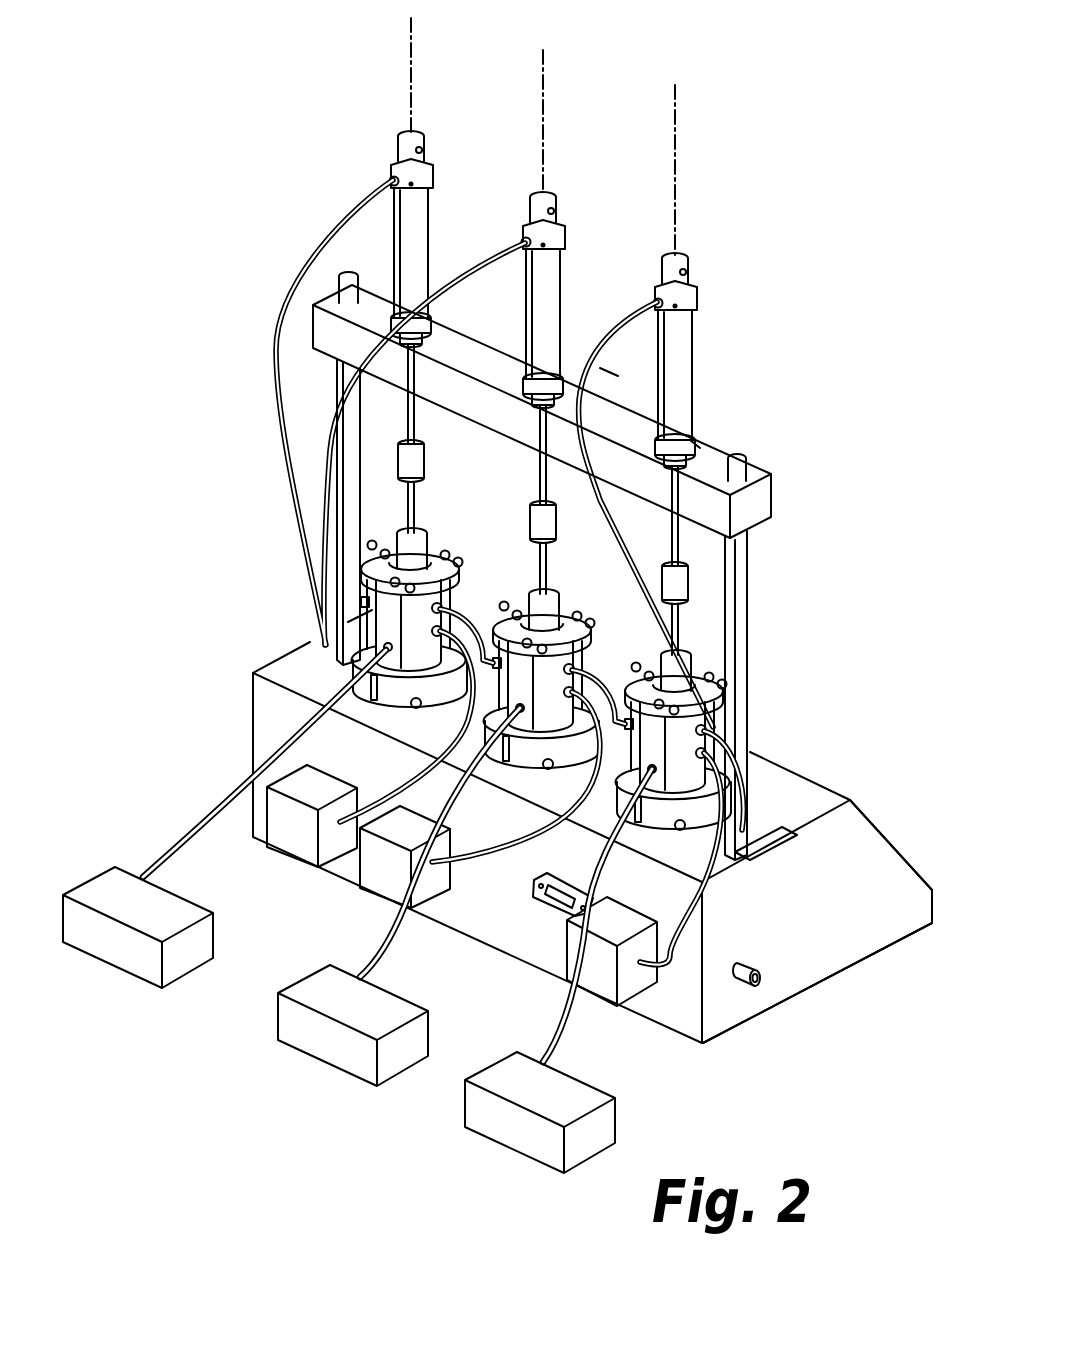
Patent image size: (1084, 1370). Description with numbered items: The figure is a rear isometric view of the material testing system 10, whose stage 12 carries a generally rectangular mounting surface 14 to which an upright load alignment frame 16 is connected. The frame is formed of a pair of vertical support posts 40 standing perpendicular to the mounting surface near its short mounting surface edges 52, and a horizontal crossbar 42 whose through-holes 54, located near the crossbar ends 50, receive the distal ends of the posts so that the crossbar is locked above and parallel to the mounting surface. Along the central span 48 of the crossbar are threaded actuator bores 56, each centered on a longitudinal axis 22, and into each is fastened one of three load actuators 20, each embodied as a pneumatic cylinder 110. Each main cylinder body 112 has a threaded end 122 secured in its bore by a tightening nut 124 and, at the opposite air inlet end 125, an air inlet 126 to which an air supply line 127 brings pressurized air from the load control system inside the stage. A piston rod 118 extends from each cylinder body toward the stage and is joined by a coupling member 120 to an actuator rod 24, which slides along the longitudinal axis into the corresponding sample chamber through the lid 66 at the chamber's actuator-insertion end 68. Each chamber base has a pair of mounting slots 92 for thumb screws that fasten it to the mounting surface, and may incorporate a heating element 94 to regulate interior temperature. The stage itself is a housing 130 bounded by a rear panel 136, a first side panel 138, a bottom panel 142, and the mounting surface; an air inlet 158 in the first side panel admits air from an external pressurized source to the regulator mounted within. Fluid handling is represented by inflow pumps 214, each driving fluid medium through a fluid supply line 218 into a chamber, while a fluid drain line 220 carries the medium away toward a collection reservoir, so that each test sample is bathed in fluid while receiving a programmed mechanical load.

The material testing system 10 is at (500, 619).
The stage 12 is at (574, 845).
The mounting surface 14 is at (792, 810).
The load alignment frame 16 is at (536, 393).
The load actuator 20 is at (541, 329).
The longitudinal axis 22 is at (734, 92).
The actuator rod 24 is at (679, 620).
The vertical support post 40 is at (740, 653).
The horizontal crossbar 42 is at (352, 310).
The central span 48 is at (455, 375).
The crossbar end 50 is at (753, 502).
The short mounting surface edge 52 is at (808, 833).
The through-hole 54 is at (746, 470).
The threaded actuator bore 56 is at (694, 444).
The lid 66 is at (530, 629).
The actuator-insertion end 68 is at (530, 697).
The mounting slot 92 is at (639, 819).
The heating element 94 is at (678, 830).
The pneumatic cylinder 110 is at (584, 314).
The main cylinder body 112 is at (678, 394).
The piston rod 118 is at (679, 543).
The coupling member 120 is at (672, 583).
The threaded end 122 is at (518, 356).
The tightening nut 124 is at (694, 458).
The air inlet end 125 is at (698, 306).
The air inlet 126 is at (658, 300).
The air supply line 127 is at (613, 323).
The housing 130 is at (894, 846).
The rear panel 136 is at (545, 940).
The first side panel 138 is at (817, 925).
The bottom panel 142 is at (829, 977).
The air inlet 158 is at (742, 990).
The inflow pump 214 is at (520, 1132).
The fluid supply line 218 is at (566, 1024).
The fluid drain line 220 is at (673, 965).